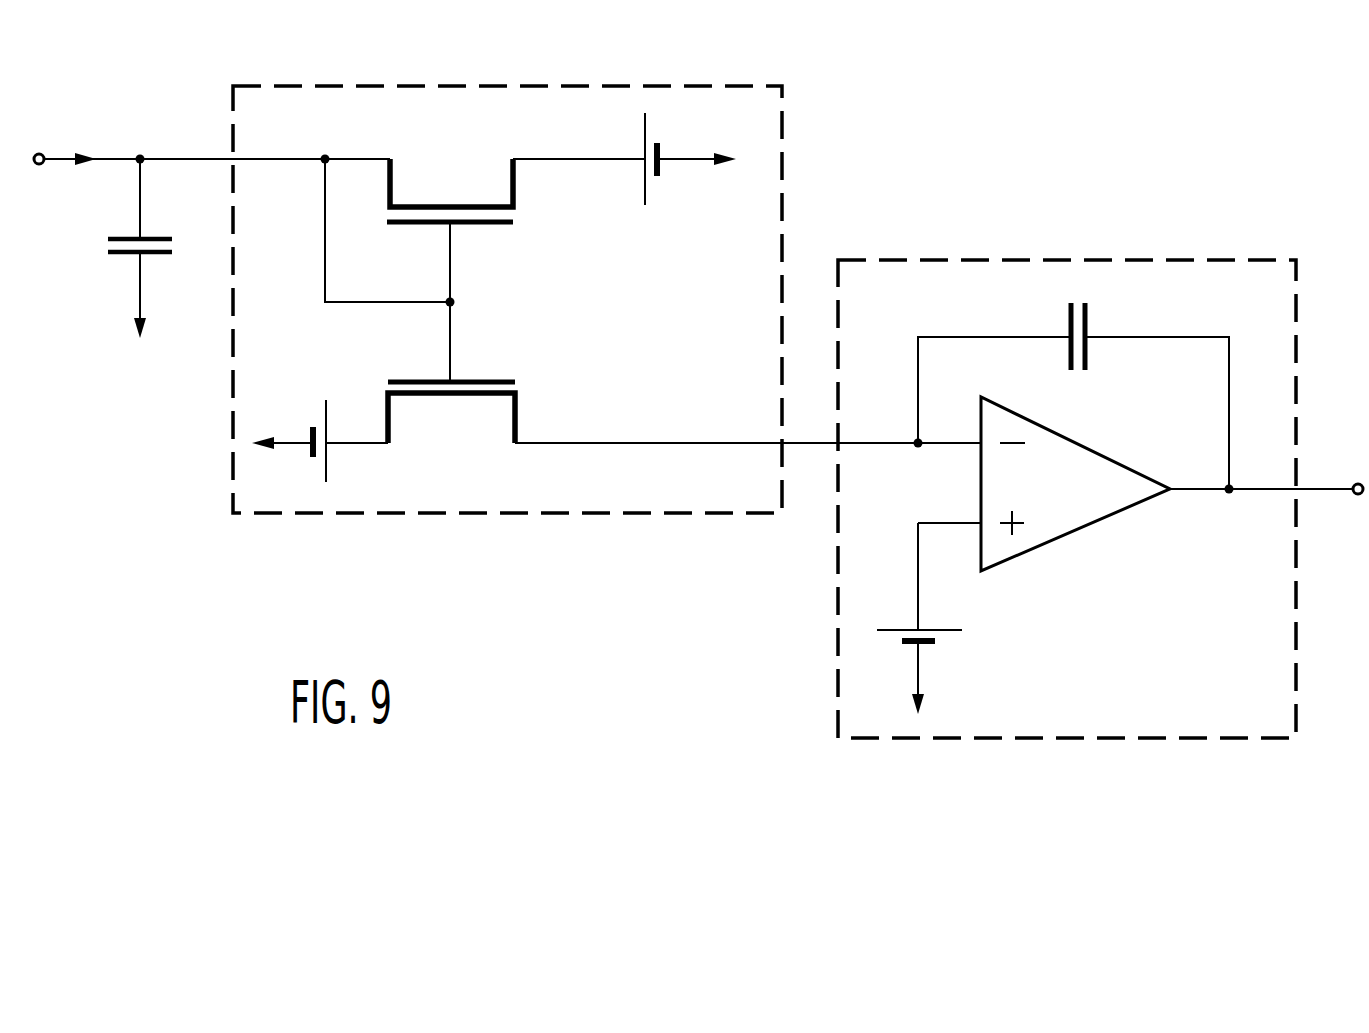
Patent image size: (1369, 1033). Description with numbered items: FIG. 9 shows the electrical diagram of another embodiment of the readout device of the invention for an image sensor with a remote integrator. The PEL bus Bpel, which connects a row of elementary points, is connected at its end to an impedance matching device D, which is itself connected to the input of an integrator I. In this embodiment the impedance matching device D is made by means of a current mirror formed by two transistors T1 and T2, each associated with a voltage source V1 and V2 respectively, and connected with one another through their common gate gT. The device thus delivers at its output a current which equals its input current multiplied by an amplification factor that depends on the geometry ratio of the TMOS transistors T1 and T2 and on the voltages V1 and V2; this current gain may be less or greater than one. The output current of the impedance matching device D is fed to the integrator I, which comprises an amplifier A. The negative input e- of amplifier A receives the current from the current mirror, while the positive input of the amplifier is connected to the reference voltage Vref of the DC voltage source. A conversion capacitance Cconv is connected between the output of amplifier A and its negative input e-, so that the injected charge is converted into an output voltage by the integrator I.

The PEL bus Bpel is at (172, 157).
The impedance matching device D is at (782, 107).
The transistor T1 is at (460, 198).
The transistor T2 is at (447, 408).
The gate gT is at (412, 270).
The voltage source V1 is at (690, 174).
The voltage source V2 is at (289, 447).
The integrator I is at (1160, 259).
The amplifier A is at (1172, 484).
The negative input e- is at (948, 434).
The conversion capacitance Cconv is at (1088, 352).
The reference voltage Vref is at (940, 618).